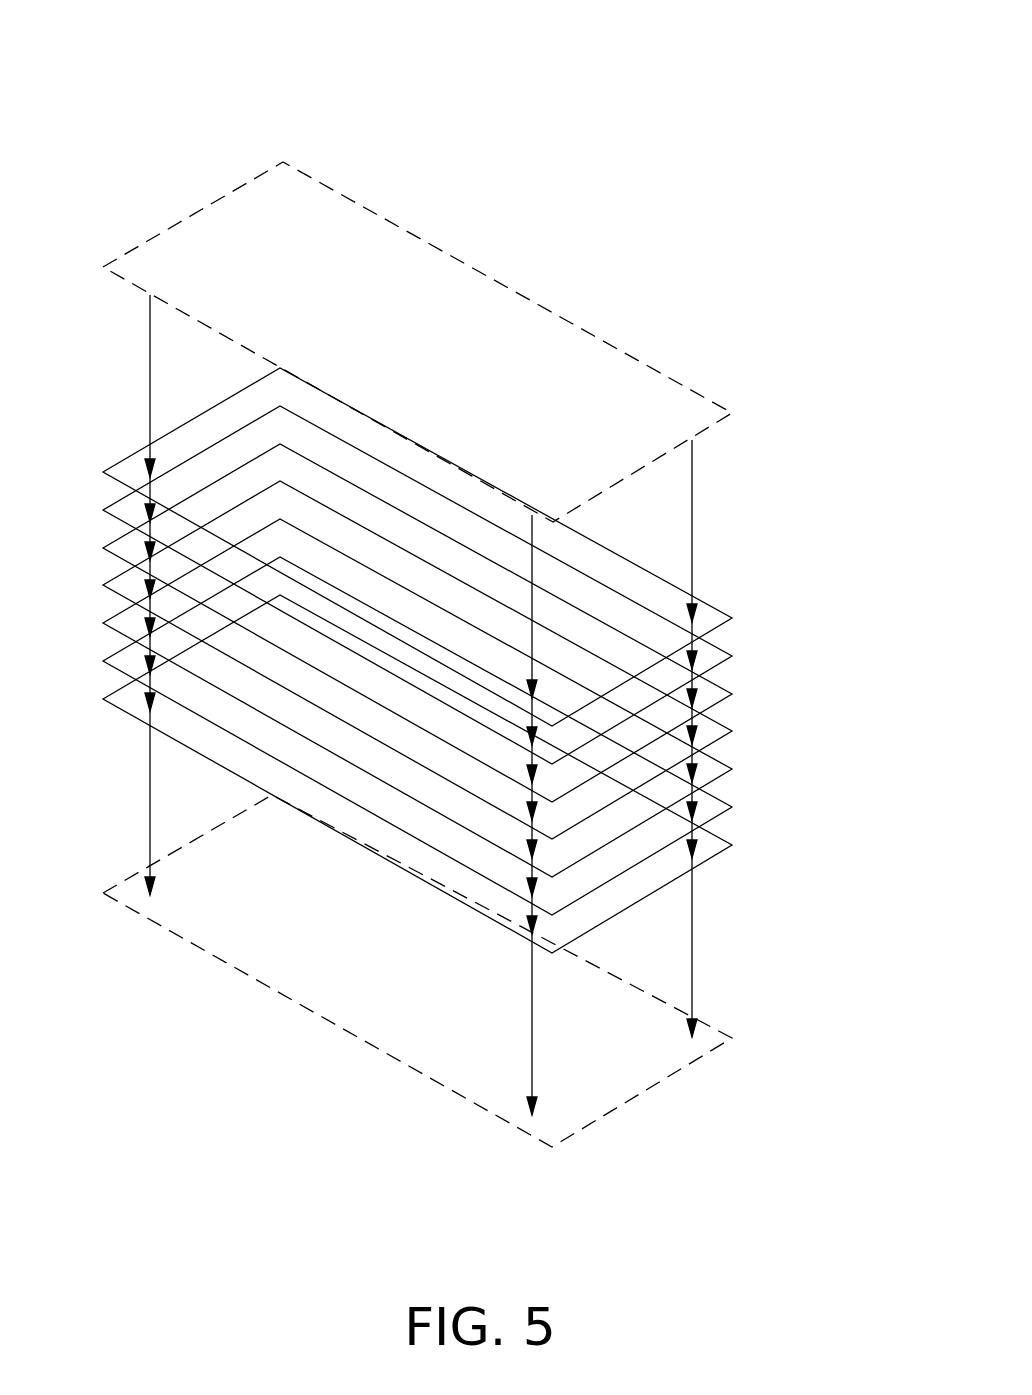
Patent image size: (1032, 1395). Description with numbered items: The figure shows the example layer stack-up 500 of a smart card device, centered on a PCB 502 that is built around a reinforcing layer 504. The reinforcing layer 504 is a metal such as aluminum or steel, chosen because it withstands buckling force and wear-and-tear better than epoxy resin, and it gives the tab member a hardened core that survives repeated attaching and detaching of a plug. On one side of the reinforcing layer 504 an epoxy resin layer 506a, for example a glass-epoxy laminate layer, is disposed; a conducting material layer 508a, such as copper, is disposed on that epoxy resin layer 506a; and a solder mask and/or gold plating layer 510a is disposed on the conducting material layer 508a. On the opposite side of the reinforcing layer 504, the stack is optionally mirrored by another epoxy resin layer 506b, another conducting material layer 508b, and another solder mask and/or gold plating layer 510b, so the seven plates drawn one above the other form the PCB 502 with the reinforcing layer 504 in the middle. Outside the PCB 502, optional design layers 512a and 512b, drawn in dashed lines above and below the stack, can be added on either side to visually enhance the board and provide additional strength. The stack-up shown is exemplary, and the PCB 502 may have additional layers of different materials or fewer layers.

The layered optical system 500 is at (108, 76).
The PCB 502 is at (97, 472).
The reinforcing layer 504 is at (517, 660).
The epoxy resin layer 506a is at (517, 623).
The another epoxy resin layer 506b is at (517, 698).
The conducting material layer 508a is at (517, 585).
The another conducting material layer 508b is at (517, 736).
The solder mask and/or gold plating layer 510a is at (517, 547).
The another solder mask and/or gold plating layer 510b is at (517, 774).
The design layer 512a is at (417, 342).
The design layer 512b is at (417, 971).